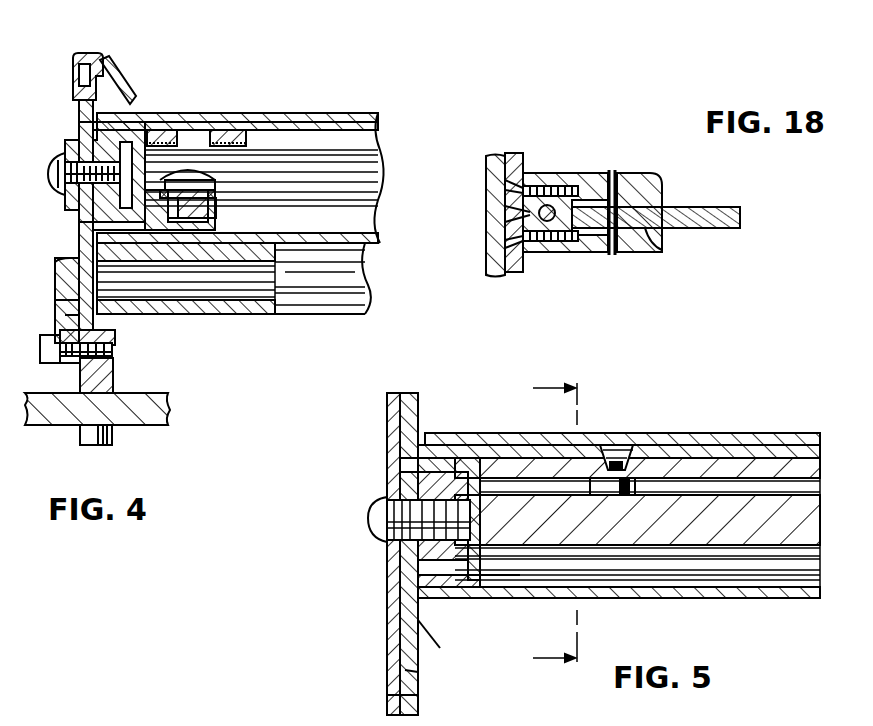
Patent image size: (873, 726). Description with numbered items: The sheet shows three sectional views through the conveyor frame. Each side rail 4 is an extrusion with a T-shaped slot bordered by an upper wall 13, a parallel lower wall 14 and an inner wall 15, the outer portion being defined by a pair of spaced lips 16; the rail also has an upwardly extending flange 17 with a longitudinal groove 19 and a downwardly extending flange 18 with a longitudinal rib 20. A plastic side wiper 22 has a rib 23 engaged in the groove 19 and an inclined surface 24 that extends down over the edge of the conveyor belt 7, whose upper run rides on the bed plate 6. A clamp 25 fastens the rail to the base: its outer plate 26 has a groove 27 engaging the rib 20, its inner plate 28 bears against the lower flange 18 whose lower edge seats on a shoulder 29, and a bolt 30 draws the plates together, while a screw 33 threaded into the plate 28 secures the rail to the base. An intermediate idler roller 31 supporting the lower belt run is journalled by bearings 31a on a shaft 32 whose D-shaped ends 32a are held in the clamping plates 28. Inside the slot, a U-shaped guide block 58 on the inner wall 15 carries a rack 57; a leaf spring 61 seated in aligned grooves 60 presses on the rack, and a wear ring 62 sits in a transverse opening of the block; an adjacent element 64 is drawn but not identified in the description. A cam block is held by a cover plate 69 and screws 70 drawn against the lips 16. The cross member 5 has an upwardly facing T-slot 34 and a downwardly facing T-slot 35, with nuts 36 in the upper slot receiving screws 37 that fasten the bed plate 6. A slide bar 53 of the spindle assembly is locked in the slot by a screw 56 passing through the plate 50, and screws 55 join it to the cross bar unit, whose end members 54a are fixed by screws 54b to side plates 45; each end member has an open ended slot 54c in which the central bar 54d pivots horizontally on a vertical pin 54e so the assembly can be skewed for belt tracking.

In FIG. 4, the side rail 4 is at (68, 132).
In FIG. 5, the side rail 4 is at (412, 628).
In FIG. 5, the cross member 5 is at (810, 519).
In FIG. 4, the bed plate 6 is at (362, 125).
In FIG. 5, the bed plate 6 is at (805, 448).
In FIG. 4, the conveyor belt 7 is at (338, 113).
In FIG. 5, the conveyor belt 7 is at (748, 433).
In FIG. 4, the upper wall 13 is at (142, 116).
In FIG. 5, the upper wall 13 is at (478, 440).
In FIG. 5, the lower wall 14 is at (450, 581).
In FIG. 5, the inner wall 15 is at (508, 581).
In FIG. 5, the lips 16 is at (405, 477).
In FIG. 4, the upwardly extending flange 17 is at (79, 116).
In FIG. 4, the downwardly extending flange 18 is at (80, 236).
In FIG. 5, the downwardly extending flange 18 is at (408, 677).
In FIG. 4, the longitudinal groove 19 is at (92, 78).
In FIG. 4, the longitudinal rib 20 is at (65, 321).
In FIG. 5, the longitudinal rib 20 is at (392, 703).
In FIG. 4, the side wiper 22 is at (87, 53).
In FIG. 4, the longitudinal rib 23 is at (78, 75).
In FIG. 4, the inclined surface 24 is at (128, 102).
In FIG. 4, the clamp 25 is at (56, 282).
In FIG. 4, the outer plate 26 is at (55, 303).
In FIG. 4, the longitudinal groove 27 is at (62, 263).
In FIG. 4, the inner plate 28 is at (115, 379).
In FIG. 4, the shoulder 29 is at (110, 337).
In FIG. 4, the bolt 30 is at (45, 353).
In FIG. 4, the intermediate idler roller 31 is at (312, 300).
In FIG. 4, the bearings 31a is at (170, 316).
In FIG. 4, the shaft 32 is at (243, 292).
In FIG. 4, the D-shaped shaft end 32a is at (96, 266).
In FIG. 4, the screw 33 is at (98, 445).
In FIG. 5, the upwardly facing T-shaped slot 34 is at (818, 481).
In FIG. 5, the downwardly facing T-shaped slot 35 is at (805, 567).
In FIG. 5, the nut 36 is at (626, 482).
In FIG. 5, the screw 37 is at (615, 460).
In FIG. 18, the side plate 45 is at (515, 155).
In FIG. 18, the plate 50 is at (486, 170).
In FIG. 5, the plate 50 is at (385, 401).
In FIG. 5, the slide bar 53 is at (440, 482).
In FIG. 18, the end member 54a is at (650, 178).
In FIG. 18, the screws 54b is at (545, 186).
In FIG. 18, the open ended slot 54c is at (660, 246).
In FIG. 18, the central bar 54d is at (718, 207).
In FIG. 18, the vertical pin 54e is at (612, 172).
In FIG. 18, the screw 55 is at (505, 214).
In FIG. 5, the screw 56 is at (368, 517).
In FIG. 4, the rack 57 is at (220, 210).
In FIG. 4, the guide block 58 is at (222, 224).
In FIG. 4, the grooves 60 is at (225, 194).
In FIG. 4, the leaf spring 61 is at (190, 178).
In FIG. 4, the wear ring 62 is at (170, 134).
In FIG. 4, the inner tube 64 is at (372, 166).
In FIG. 4, the cover plate 69 is at (58, 186).
In FIG. 4, the screws 70 is at (52, 176).